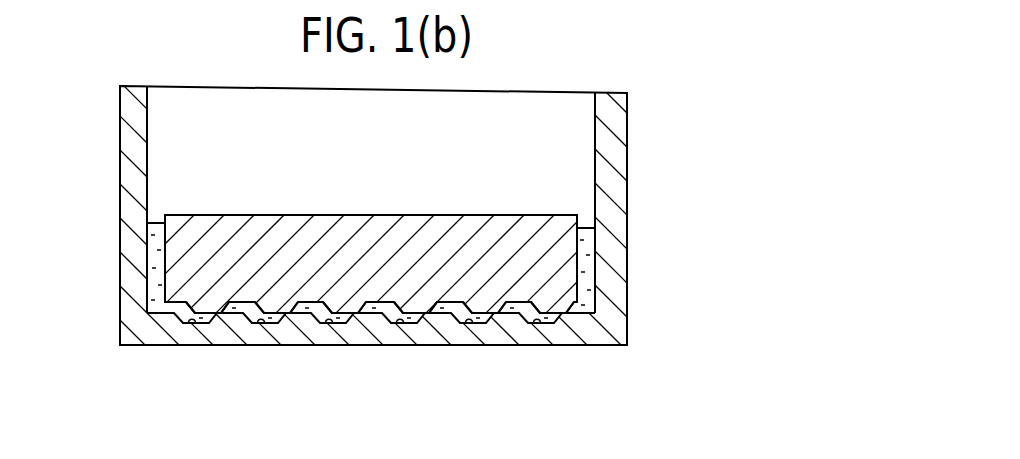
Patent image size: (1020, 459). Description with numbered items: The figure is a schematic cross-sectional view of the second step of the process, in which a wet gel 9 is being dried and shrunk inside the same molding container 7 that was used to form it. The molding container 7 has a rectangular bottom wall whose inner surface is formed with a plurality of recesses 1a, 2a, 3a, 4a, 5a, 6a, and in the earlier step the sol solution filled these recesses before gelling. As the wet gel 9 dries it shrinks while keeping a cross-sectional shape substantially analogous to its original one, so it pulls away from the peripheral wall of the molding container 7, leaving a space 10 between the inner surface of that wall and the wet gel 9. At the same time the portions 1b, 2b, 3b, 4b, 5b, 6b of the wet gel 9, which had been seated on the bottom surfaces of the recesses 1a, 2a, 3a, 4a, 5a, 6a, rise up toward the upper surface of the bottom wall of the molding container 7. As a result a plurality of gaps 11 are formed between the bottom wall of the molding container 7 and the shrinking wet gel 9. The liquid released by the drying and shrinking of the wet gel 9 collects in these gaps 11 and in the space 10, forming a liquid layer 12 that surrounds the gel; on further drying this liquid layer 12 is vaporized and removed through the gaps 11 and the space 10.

The molding container 7 is at (632, 147).
The wet gel 9 is at (571, 285).
The space 10 is at (162, 222).
The gaps 11 is at (560, 301).
The liquid layer 12 is at (152, 247).
The recess 1a is at (191, 327).
The recess 2a is at (260, 327).
The recess 3a is at (329, 327).
The recess 4a is at (401, 327).
The recess 5a is at (469, 327).
The recess 6a is at (537, 327).
The portion of the wet gel 1b is at (203, 317).
The portion of the wet gel 2b is at (273, 317).
The portion of the wet gel 3b is at (342, 317).
The portion of the wet gel 4b is at (413, 317).
The portion of the wet gel 5b is at (481, 317).
The portion of the wet gel 6b is at (549, 317).